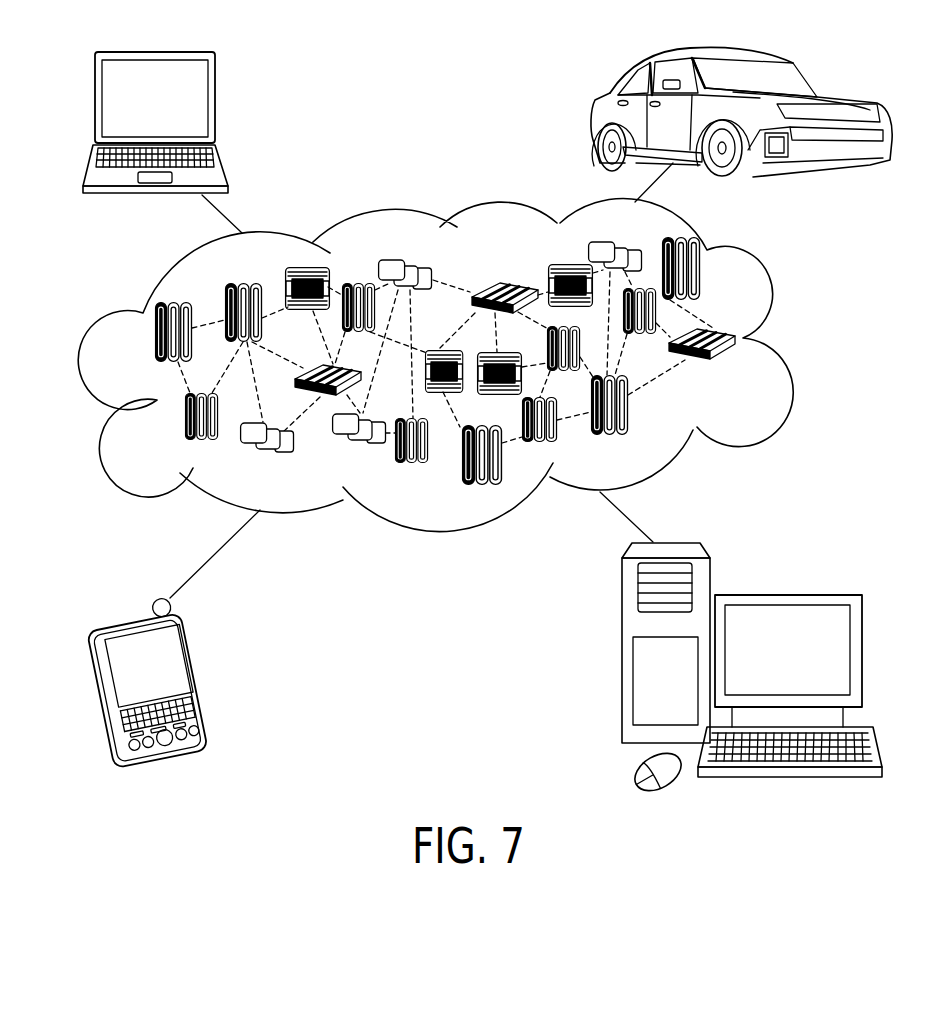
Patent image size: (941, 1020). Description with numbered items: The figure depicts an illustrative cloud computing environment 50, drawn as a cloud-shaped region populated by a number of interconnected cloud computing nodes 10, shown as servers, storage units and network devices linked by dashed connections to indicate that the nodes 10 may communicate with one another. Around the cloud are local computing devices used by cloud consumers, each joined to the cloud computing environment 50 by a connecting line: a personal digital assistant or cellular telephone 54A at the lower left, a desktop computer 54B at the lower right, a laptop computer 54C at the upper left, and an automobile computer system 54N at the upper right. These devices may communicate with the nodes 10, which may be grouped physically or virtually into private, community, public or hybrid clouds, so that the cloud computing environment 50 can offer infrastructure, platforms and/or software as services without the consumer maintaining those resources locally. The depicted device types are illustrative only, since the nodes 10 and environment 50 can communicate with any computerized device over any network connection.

The cloud computing node 10 is at (747, 368).
The cloud computing environment 50 is at (785, 342).
The personal digital assistant or cellular telephone 54A is at (207, 673).
The desktop computer 54B is at (785, 595).
The laptop computer 54C is at (215, 98).
The automobile computer system 54N is at (595, 115).